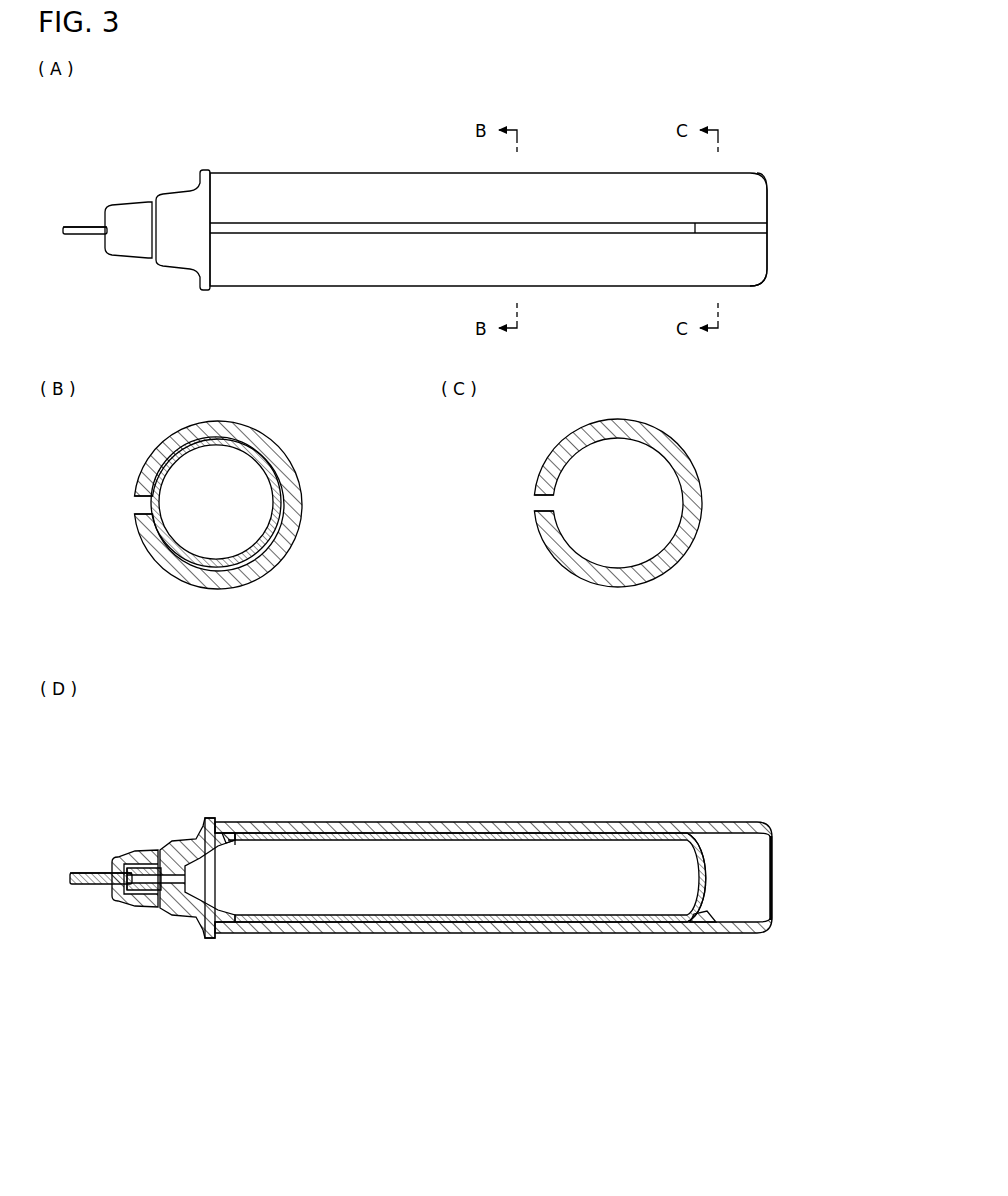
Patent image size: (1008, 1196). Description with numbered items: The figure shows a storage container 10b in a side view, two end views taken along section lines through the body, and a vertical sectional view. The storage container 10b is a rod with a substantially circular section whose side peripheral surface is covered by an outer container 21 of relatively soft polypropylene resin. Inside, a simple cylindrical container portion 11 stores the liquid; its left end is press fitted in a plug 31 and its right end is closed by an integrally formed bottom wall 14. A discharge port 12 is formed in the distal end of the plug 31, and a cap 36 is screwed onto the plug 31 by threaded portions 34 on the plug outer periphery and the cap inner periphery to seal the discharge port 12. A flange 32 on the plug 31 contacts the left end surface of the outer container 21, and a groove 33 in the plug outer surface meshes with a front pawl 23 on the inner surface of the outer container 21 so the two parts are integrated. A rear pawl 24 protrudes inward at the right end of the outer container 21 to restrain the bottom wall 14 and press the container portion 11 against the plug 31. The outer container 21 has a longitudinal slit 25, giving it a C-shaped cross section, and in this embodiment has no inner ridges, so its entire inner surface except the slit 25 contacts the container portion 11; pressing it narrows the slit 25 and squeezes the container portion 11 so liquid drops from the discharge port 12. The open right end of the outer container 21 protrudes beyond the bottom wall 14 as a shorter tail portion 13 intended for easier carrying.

The storage container 10b is at (304, 156).
The container portion 11 is at (263, 460).
The discharge port 12 is at (128, 902).
The tail portion 13 is at (737, 262).
The bottom wall 14 is at (700, 865).
The outer container 21 is at (290, 291).
The front pawl 23 is at (232, 833).
The rear pawl 24 is at (710, 925).
The slit 25 is at (388, 234).
The plug 31 is at (180, 206).
The flange 32 is at (208, 938).
The groove 33 is at (231, 842).
The threaded portion 34 is at (158, 905).
The cap 36 is at (125, 218).